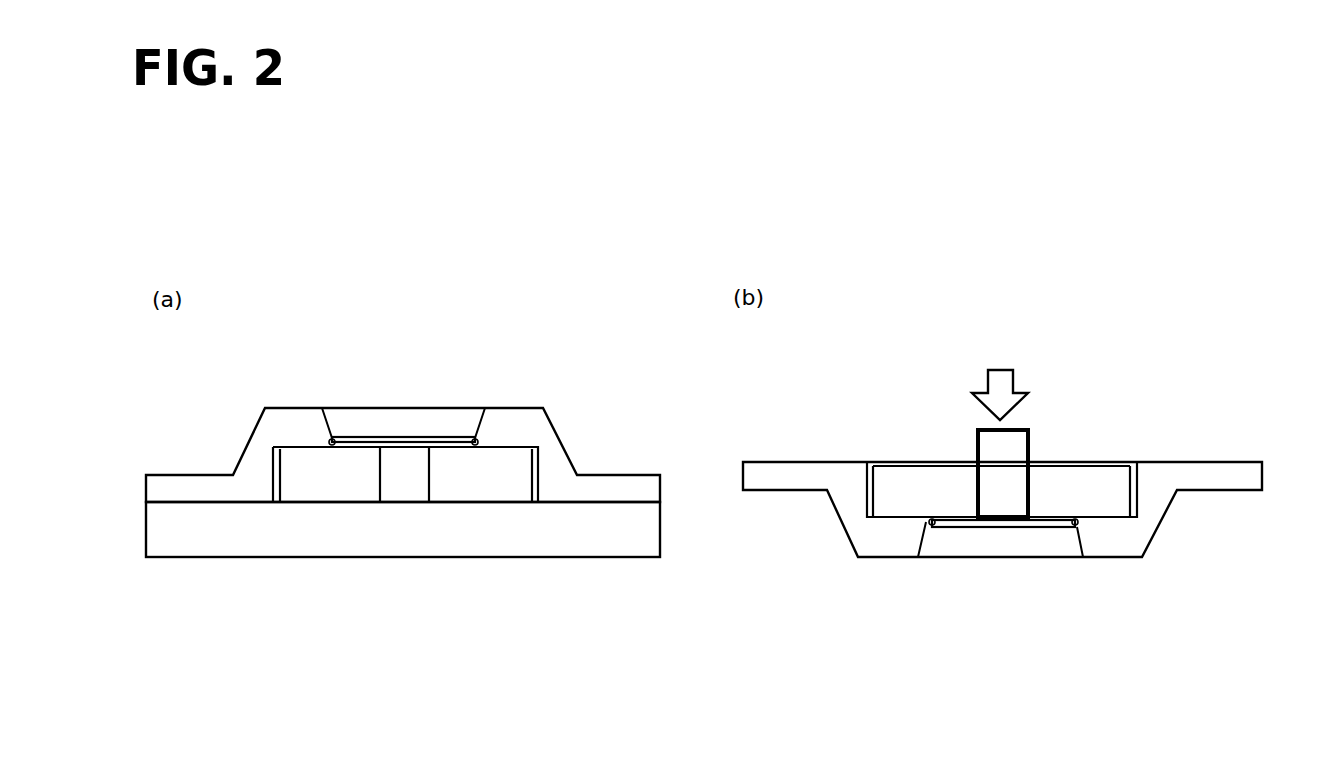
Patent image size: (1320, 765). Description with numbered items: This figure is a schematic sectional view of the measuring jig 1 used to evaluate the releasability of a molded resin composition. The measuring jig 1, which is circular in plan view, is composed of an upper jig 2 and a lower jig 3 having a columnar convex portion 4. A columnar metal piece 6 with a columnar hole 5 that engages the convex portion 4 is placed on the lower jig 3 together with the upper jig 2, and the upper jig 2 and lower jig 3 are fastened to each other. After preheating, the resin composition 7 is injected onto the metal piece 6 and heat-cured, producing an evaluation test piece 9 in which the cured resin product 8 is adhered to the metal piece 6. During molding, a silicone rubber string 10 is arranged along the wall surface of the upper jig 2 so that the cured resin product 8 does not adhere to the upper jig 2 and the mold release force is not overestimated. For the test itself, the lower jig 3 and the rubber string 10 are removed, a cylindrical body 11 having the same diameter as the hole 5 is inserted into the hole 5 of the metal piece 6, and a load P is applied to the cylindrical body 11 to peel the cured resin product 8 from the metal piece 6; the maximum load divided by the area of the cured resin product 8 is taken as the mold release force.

The measuring jig 1 is at (562, 388).
The upper jig 2 is at (602, 473).
The lower jig 3 is at (587, 537).
The convex portion 4 is at (408, 482).
The hole 5 is at (385, 483).
The metal piece 6 is at (292, 480).
The resin composition 7 is at (702, 482).
The cured resin product 8 is at (410, 437).
The evaluation test piece 9 is at (384, 428).
The silicone rubber string 10 is at (331, 437).
The cylindrical body 11 is at (978, 447).
The load P is at (1000, 380).